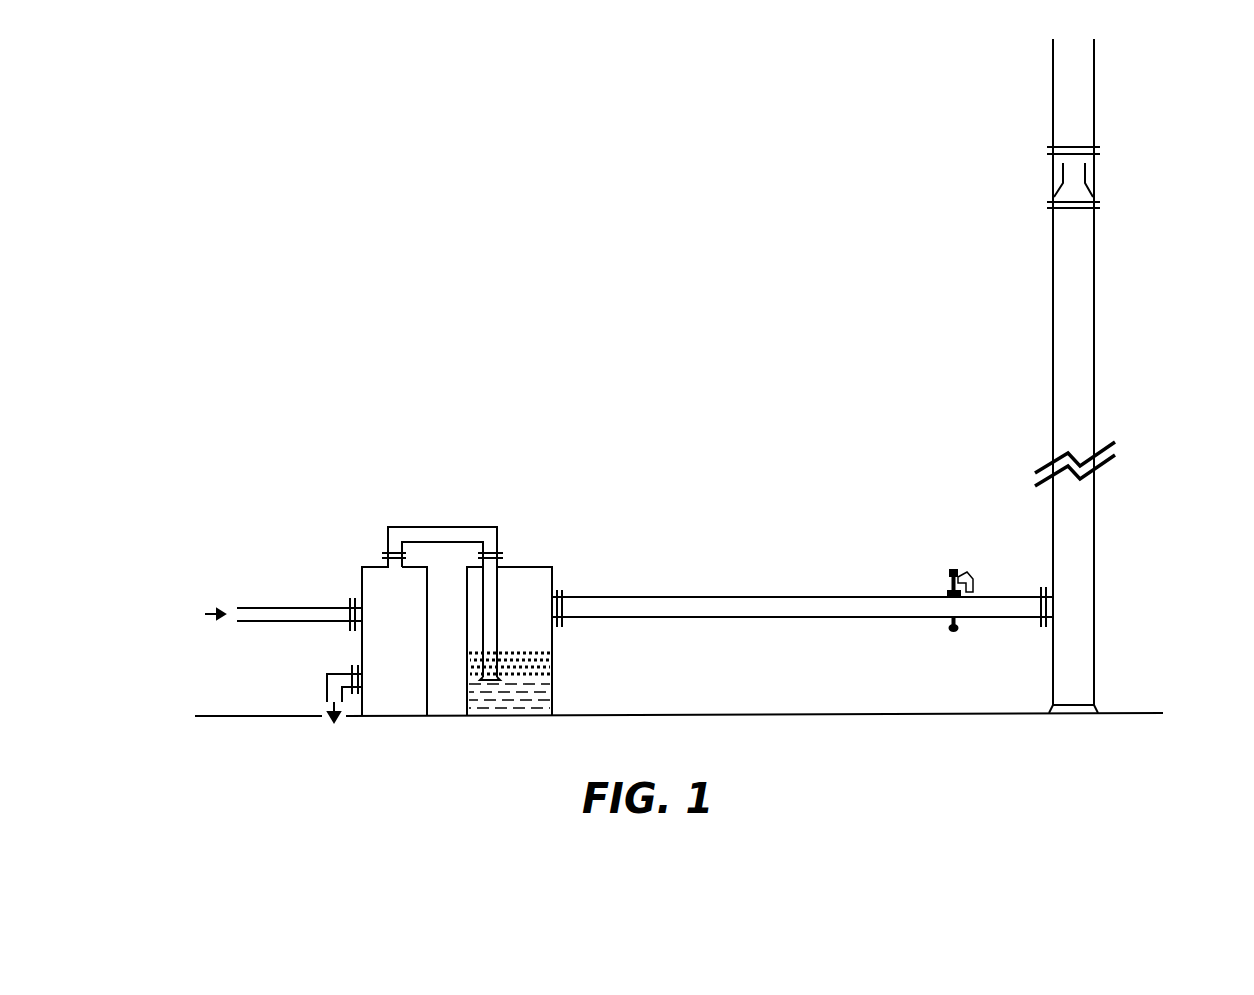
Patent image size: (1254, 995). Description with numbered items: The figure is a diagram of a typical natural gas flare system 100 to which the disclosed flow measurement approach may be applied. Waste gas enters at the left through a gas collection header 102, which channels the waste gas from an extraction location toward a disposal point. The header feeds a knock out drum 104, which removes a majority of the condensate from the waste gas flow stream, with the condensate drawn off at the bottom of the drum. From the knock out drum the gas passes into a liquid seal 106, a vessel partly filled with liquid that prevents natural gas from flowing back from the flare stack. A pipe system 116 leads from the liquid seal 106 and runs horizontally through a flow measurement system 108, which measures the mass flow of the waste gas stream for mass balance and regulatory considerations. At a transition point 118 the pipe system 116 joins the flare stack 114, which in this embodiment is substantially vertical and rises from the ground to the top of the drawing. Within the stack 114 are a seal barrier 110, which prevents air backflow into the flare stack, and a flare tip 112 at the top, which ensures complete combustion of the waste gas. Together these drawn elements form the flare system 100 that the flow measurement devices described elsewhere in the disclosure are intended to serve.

The flare system 100 is at (679, 423).
The gas collection header 102 is at (259, 606).
The knock out drum 104 is at (373, 567).
The liquid seal 106 is at (521, 567).
The flow measurement system 108 is at (962, 578).
The seal barrier 110 is at (1095, 190).
The flare tip 112 is at (1095, 73).
The flare stack 114 is at (1110, 394).
The pipe system 116 is at (752, 566).
The transition point 118 is at (1053, 587).